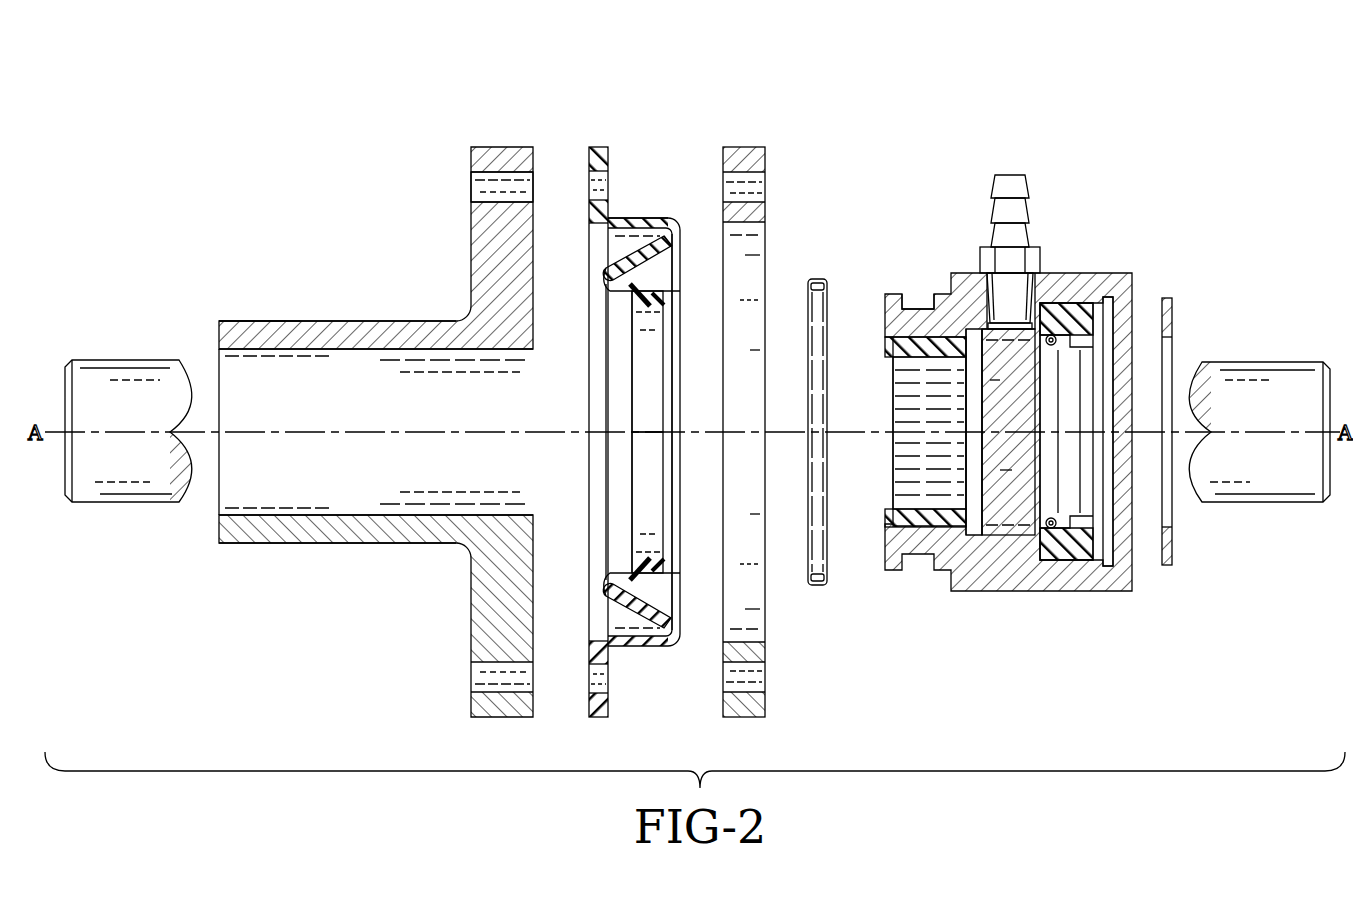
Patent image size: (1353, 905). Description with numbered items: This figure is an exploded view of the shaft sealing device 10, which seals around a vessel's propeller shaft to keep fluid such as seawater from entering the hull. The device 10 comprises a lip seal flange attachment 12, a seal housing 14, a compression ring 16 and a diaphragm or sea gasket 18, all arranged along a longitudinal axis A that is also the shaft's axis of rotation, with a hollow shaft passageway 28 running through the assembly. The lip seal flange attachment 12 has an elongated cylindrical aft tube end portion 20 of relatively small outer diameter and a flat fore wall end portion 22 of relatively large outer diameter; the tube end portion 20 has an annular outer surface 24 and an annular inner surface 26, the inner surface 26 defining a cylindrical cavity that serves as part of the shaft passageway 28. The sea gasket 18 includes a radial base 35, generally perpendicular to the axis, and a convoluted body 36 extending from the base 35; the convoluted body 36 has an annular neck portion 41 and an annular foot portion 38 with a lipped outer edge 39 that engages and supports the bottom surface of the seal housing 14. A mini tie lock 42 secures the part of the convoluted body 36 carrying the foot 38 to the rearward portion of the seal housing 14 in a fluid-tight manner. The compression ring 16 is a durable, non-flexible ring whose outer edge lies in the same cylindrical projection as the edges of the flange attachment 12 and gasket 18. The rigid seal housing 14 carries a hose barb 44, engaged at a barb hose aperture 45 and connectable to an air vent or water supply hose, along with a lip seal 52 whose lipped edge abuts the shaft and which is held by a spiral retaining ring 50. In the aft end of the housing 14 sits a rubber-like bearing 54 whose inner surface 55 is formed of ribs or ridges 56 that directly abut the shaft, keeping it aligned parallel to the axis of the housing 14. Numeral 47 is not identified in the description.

The shaft sealing device 10 is at (288, 163).
The lip seal flange attachment 12 is at (468, 243).
The seal housing 14 is at (988, 594).
The compression ring 16 is at (770, 157).
The sea gasket 18 is at (630, 217).
The aft tube end portion 20 is at (314, 330).
The fore wall end portion 22 is at (507, 160).
The annular outer surface 24 is at (320, 546).
The annular inner surface 26 is at (292, 512).
The shaft passageway 28 is at (245, 380).
The radial base 35 is at (598, 150).
The convoluted body 36 is at (674, 607).
The annular foot portion 38 is at (674, 312).
The lipped outer edge 39 is at (675, 285).
The annular neck portion 41 is at (628, 224).
The mini tie lock 42 is at (817, 280).
The hose barb 44 is at (1012, 177).
The barb hose aperture 45 is at (640, 315).
The groove 47 is at (916, 302).
The spiral retaining ring 50 is at (1168, 297).
The lip seal 52 is at (1078, 562).
The bearing 54 is at (912, 355).
The inner surface 55 is at (910, 512).
The ribs or ridges 56 is at (940, 480).